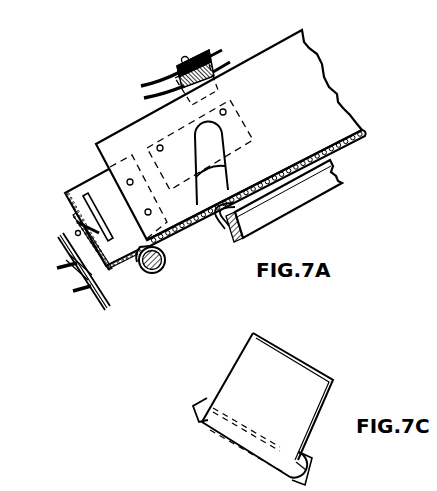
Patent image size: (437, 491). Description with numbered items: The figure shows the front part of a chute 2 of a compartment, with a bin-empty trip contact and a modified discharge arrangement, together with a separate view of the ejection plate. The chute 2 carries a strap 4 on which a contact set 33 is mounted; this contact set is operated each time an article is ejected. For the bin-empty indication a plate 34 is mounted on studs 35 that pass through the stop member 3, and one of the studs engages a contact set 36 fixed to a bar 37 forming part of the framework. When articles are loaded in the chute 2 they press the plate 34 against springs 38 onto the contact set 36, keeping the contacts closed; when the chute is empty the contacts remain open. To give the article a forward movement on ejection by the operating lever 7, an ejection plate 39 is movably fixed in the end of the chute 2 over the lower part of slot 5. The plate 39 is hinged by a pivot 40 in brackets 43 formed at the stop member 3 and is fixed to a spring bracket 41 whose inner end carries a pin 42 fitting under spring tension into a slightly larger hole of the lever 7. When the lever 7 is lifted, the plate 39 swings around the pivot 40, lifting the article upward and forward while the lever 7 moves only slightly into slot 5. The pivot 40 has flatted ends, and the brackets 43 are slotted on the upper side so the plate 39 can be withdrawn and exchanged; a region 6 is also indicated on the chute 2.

In FIG. 7A, the chute 2 is at (283, 52).
In FIG. 7A, the stop member 3 is at (102, 222).
In FIG. 7A, the strap 4 is at (216, 75).
In FIG. 7A, the slot 5 is at (215, 187).
In FIG. 7A, the mounting area 6 is at (243, 131).
In FIG. 7A, the operating lever 7 is at (306, 190).
In FIG. 7A, the contact set 33 is at (199, 63).
In FIG. 7A, the plate 34 is at (84, 193).
In FIG. 7A, the studs 35 is at (76, 221).
In FIG. 7A, the contact set 36 is at (72, 258).
In FIG. 7A, the bar 37 is at (81, 294).
In FIG. 7A, the springs 38 is at (104, 239).
In FIG. 7A, the ejection plate 39 is at (188, 221).
In FIG. 7C, the ejection plate 39 is at (297, 363).
In FIG. 7A, the pivot 40 is at (166, 258).
In FIG. 7C, the pivot 40 is at (302, 467).
In FIG. 7A, the spring bracket 41 is at (217, 216).
In FIG. 7A, the pin 42 is at (244, 235).
In FIG. 7A, the brackets 43 is at (155, 272).